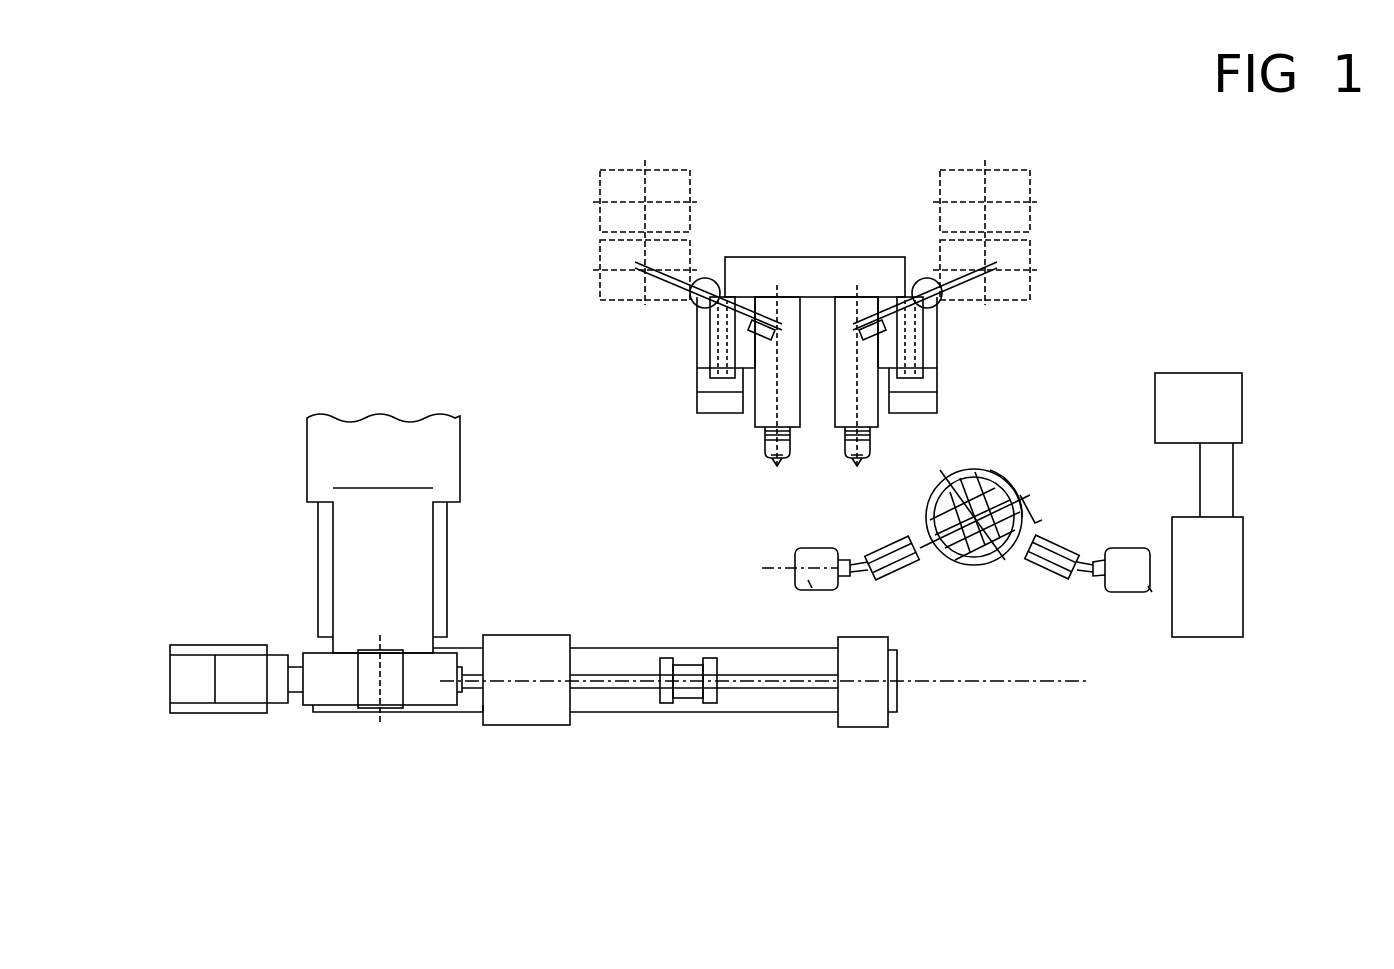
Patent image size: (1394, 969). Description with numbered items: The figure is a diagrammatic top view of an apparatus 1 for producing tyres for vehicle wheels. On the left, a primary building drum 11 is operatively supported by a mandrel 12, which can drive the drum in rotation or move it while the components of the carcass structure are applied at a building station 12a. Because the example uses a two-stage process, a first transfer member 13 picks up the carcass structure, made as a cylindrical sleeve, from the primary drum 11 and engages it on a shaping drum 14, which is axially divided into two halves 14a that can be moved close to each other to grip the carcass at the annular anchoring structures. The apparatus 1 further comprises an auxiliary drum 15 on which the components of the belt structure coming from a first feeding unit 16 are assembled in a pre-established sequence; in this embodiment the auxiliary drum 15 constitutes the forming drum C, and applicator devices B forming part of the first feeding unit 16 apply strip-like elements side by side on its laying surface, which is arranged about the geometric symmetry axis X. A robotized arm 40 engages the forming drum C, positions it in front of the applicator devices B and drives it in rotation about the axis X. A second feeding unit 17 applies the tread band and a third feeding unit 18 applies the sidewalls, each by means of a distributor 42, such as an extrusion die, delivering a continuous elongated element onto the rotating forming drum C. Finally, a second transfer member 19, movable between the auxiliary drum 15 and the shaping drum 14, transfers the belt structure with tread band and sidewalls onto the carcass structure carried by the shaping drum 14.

The apparatus 1 is at (445, 256).
The primary building drum 11 is at (373, 690).
The mandrel 12 is at (297, 684).
The building station 12a is at (297, 522).
The first transfer member 13 is at (520, 708).
The shaping drum 14 is at (688, 692).
The halves 14a is at (666, 706).
The auxiliary drum 15 is at (842, 549).
The first feeding unit 16 is at (1195, 352).
The second feeding unit 17 is at (890, 448).
The third feeding unit 18 is at (760, 445).
The second transfer member 19 is at (876, 716).
The robotized arm 40 is at (973, 566).
The distributor 42 is at (778, 466).
The applicator devices B is at (1220, 598).
The forming drum C is at (812, 583).
The geometric symmetry axis X is at (775, 556).